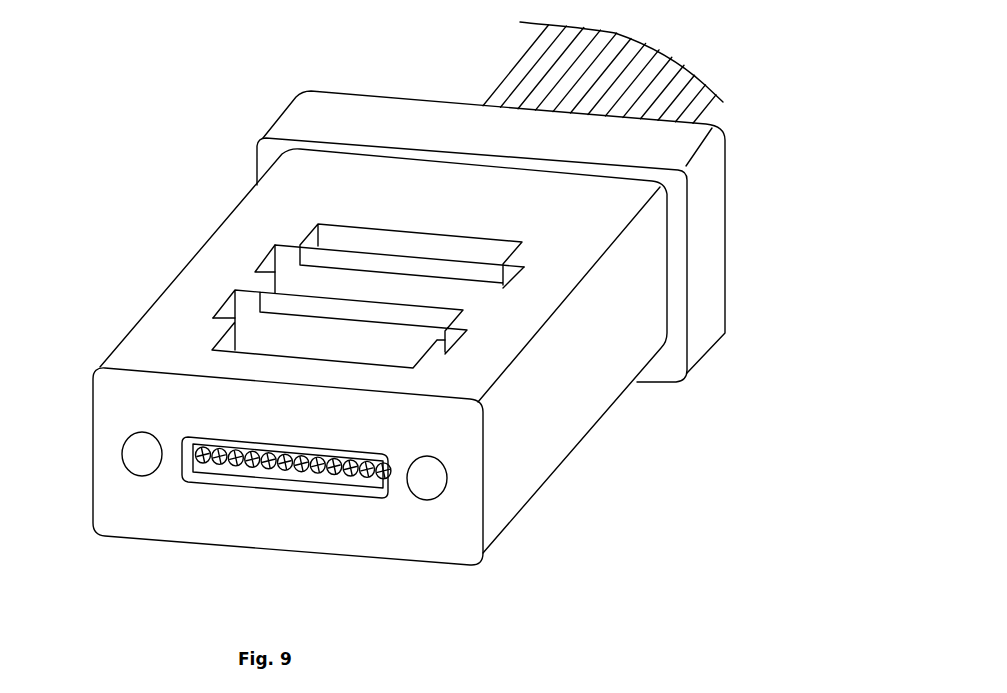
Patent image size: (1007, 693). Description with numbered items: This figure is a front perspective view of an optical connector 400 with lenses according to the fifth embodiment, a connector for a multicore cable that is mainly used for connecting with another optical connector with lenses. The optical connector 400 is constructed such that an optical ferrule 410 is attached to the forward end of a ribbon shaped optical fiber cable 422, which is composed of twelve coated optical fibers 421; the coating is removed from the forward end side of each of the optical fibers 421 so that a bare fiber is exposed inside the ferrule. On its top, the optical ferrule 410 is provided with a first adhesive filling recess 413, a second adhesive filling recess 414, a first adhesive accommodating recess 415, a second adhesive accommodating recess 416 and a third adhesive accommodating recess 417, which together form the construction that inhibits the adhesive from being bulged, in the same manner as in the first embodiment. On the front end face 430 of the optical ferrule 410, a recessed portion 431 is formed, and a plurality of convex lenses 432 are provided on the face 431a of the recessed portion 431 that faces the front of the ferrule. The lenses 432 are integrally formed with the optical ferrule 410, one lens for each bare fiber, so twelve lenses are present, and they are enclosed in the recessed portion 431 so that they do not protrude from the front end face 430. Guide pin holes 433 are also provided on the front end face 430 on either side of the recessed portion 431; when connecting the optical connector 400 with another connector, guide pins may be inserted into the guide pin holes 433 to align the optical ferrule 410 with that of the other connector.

The optical connector 400 is at (738, 67).
The optical ferrule 410 is at (218, 165).
The first adhesive filling recess 413 is at (233, 320).
The second adhesive filling recess 414 is at (273, 274).
The first adhesive accommodating recess 415 is at (234, 350).
The second adhesive accommodating recess 416 is at (318, 258).
The third adhesive accommodating recess 417 is at (274, 300).
The coated optical fiber 421 is at (693, 108).
The optical fiber cable 422 is at (498, 68).
The front end face 430 is at (433, 537).
The recessed portion 431 is at (232, 480).
The face of the recessed portion 431a is at (362, 480).
The lenses 432 is at (299, 474).
The guide pin holes 433 is at (122, 455).